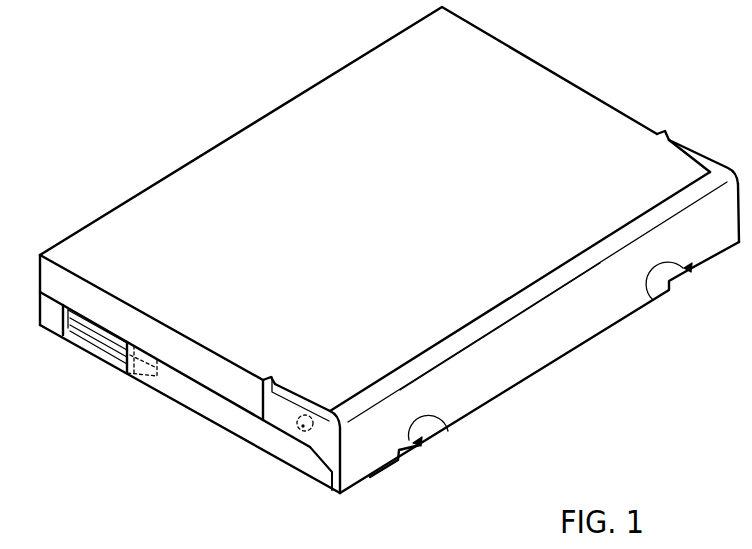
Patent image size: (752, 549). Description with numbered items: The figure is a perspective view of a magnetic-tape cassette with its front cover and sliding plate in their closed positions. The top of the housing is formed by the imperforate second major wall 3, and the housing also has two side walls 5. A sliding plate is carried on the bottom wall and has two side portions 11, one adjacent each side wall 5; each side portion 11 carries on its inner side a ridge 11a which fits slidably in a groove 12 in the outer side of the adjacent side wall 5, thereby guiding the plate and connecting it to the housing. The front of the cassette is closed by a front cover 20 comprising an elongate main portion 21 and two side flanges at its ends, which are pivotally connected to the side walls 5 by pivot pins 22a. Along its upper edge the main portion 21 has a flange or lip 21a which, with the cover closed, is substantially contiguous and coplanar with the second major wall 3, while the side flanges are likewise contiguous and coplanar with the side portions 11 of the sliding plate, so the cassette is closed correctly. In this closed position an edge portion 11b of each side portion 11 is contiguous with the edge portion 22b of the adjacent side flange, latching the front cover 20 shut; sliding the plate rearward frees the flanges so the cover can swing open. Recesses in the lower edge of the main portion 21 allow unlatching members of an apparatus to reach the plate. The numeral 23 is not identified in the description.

The second major wall 3 is at (549, 87).
The side wall 5 is at (210, 375).
The side portion 11 is at (153, 377).
The ridge 11a is at (128, 382).
The edge portion 11b is at (310, 452).
The groove 12 is at (97, 340).
The front cover 20 is at (549, 373).
The main portion 21 is at (563, 283).
The flange or lip 21a is at (481, 328).
The pivot pin 22a is at (297, 435).
The edge portion 22b is at (280, 421).
The corner edge 23 is at (322, 548).